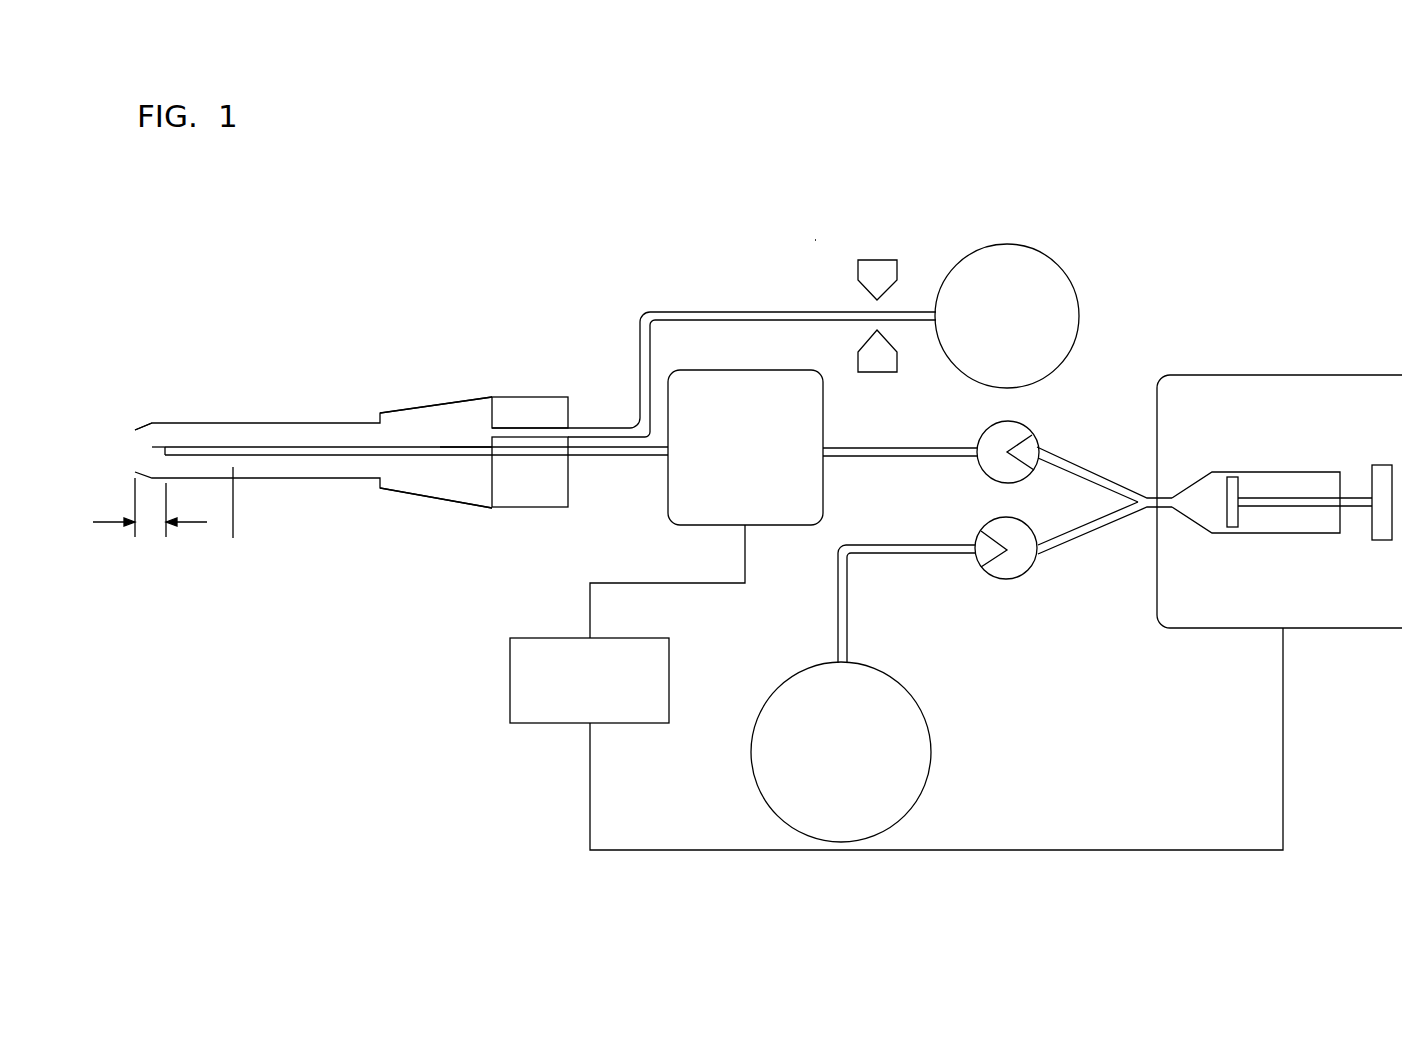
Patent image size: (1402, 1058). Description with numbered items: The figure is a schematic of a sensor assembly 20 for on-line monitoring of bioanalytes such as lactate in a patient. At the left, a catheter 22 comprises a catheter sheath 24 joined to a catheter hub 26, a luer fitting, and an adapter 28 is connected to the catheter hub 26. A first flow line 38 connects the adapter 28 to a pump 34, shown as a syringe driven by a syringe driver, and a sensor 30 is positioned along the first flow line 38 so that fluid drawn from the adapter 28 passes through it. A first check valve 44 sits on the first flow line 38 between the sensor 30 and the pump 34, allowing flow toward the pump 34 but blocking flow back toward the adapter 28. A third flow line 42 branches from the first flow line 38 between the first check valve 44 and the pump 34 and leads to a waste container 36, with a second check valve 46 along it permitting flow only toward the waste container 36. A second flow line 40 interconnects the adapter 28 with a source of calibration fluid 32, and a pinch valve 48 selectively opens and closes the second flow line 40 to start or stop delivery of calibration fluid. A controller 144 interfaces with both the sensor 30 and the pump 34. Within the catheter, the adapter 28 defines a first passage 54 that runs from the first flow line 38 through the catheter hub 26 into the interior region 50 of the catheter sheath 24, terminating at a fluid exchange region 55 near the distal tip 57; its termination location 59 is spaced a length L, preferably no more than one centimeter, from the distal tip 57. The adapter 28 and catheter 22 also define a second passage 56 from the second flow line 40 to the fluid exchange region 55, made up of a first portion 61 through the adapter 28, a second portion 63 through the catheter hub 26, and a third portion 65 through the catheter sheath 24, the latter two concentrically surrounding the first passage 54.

The sensor assembly 20 is at (797, 235).
The catheter 22 is at (347, 372).
The catheter sheath 24 is at (230, 423).
The catheter hub 26 is at (447, 500).
The adapter 28 is at (540, 397).
The sensor 30 is at (758, 370).
The source of calibration fluid 32 is at (1043, 252).
The pump 34 is at (1300, 372).
The waste container 36 is at (932, 768).
The first flow line 38 is at (643, 457).
The second flow line 40 is at (718, 311).
The third flow line 42 is at (1070, 543).
The first check valve 44 is at (1028, 427).
The second check valve 46 is at (1010, 582).
The pinch valve 48 is at (890, 260).
The interior region 50 is at (235, 518).
The first passage 54 is at (337, 452).
The fluid exchange region 55 is at (150, 447).
The second passage 56 is at (465, 420).
The distal tip 57 is at (135, 430).
The termination location 59 is at (167, 447).
The first portion 61 is at (538, 428).
The second portion 63 is at (438, 420).
The third portion 65 is at (292, 432).
The controller 144 is at (525, 723).